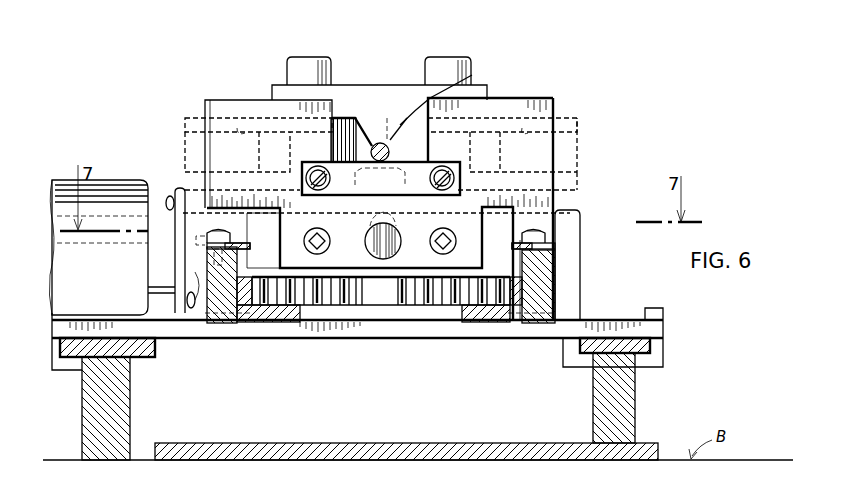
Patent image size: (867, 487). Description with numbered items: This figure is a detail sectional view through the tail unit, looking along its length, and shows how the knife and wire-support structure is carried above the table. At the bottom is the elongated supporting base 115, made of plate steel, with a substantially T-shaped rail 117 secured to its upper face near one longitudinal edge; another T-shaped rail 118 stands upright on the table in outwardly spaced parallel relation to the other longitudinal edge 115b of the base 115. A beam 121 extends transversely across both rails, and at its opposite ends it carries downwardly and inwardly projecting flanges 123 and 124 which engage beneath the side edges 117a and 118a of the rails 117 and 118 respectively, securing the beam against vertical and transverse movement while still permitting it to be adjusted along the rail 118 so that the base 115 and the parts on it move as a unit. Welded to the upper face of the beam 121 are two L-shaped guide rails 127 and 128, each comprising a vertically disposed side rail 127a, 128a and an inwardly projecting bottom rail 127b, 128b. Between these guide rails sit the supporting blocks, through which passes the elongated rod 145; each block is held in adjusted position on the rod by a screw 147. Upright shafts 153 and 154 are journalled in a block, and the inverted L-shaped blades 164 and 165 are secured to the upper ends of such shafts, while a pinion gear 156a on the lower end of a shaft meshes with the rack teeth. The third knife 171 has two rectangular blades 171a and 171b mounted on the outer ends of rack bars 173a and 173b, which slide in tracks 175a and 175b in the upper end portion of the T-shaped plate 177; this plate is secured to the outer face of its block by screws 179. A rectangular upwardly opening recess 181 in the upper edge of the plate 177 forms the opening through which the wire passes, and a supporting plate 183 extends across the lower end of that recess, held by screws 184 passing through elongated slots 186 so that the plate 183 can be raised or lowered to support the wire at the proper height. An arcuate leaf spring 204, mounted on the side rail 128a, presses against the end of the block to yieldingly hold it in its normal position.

The supporting base 115 is at (418, 428).
The longitudinal edge of base 115b is at (158, 446).
The T-shaped rail 117 is at (600, 405).
The side edge of rail 117a is at (140, 352).
The T-shaped rail 118 is at (120, 413).
The side edge of rail 118a is at (580, 347).
The beam 121 is at (378, 332).
The flange 123 is at (648, 368).
The flange 124 is at (70, 365).
The guide rail 127 is at (238, 326).
The side rail 127a is at (222, 338).
The bottom rail 127b is at (280, 322).
The guide rail 128 is at (568, 288).
The side rail 128a is at (555, 270).
The bottom rail 128b is at (490, 312).
The rod 145 is at (318, 238).
The screw 147 is at (392, 228).
The shaft 153 is at (298, 57).
The shaft 154 is at (447, 57).
The pinion gear 156a is at (335, 300).
The blade 164 is at (368, 85).
The blade 165 is at (387, 118).
The third knife 171 is at (560, 120).
The blade 171a is at (343, 118).
The blade 171b is at (428, 118).
The rack bar 173a is at (190, 118).
The rack bar 173b is at (578, 118).
The track 175a is at (238, 128).
The track 175b is at (522, 128).
The T-shaped plate 177 is at (545, 98).
The screw 179 is at (440, 249).
The recess or slot 181 is at (472, 75).
The supporting plate 183 is at (420, 180).
The screw 184 is at (318, 165).
The elongated slot 186 is at (386, 150).
The leaf spring 204 is at (545, 232).